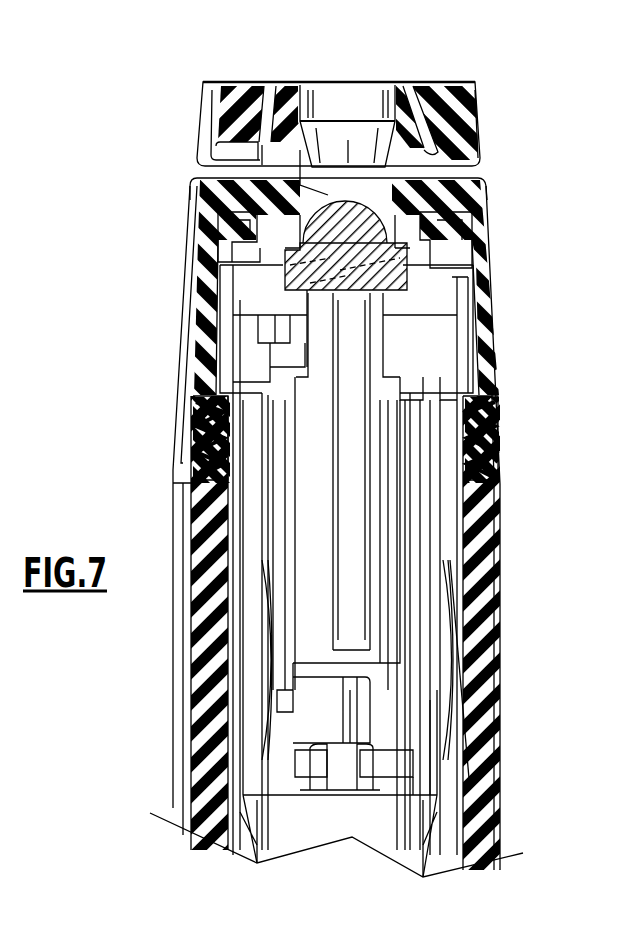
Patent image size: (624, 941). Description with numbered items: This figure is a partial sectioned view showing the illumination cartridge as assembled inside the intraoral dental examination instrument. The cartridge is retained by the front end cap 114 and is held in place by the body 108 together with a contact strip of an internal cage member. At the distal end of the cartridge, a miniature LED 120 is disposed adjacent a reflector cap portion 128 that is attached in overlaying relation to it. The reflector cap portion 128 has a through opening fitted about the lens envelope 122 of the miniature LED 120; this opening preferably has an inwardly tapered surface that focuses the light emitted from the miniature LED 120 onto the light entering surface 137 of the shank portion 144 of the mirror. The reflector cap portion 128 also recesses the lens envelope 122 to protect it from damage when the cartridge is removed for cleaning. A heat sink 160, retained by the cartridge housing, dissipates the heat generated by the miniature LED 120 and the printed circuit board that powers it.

The body 108 is at (483, 550).
The front end cap 114 is at (467, 130).
The miniature LED 120 is at (380, 266).
The lens envelope 122 is at (323, 221).
The reflector cap portion 128 is at (295, 187).
The light entering surface 137 is at (482, 188).
The shank portion 144 is at (330, 120).
The heat sink 160 is at (380, 638).